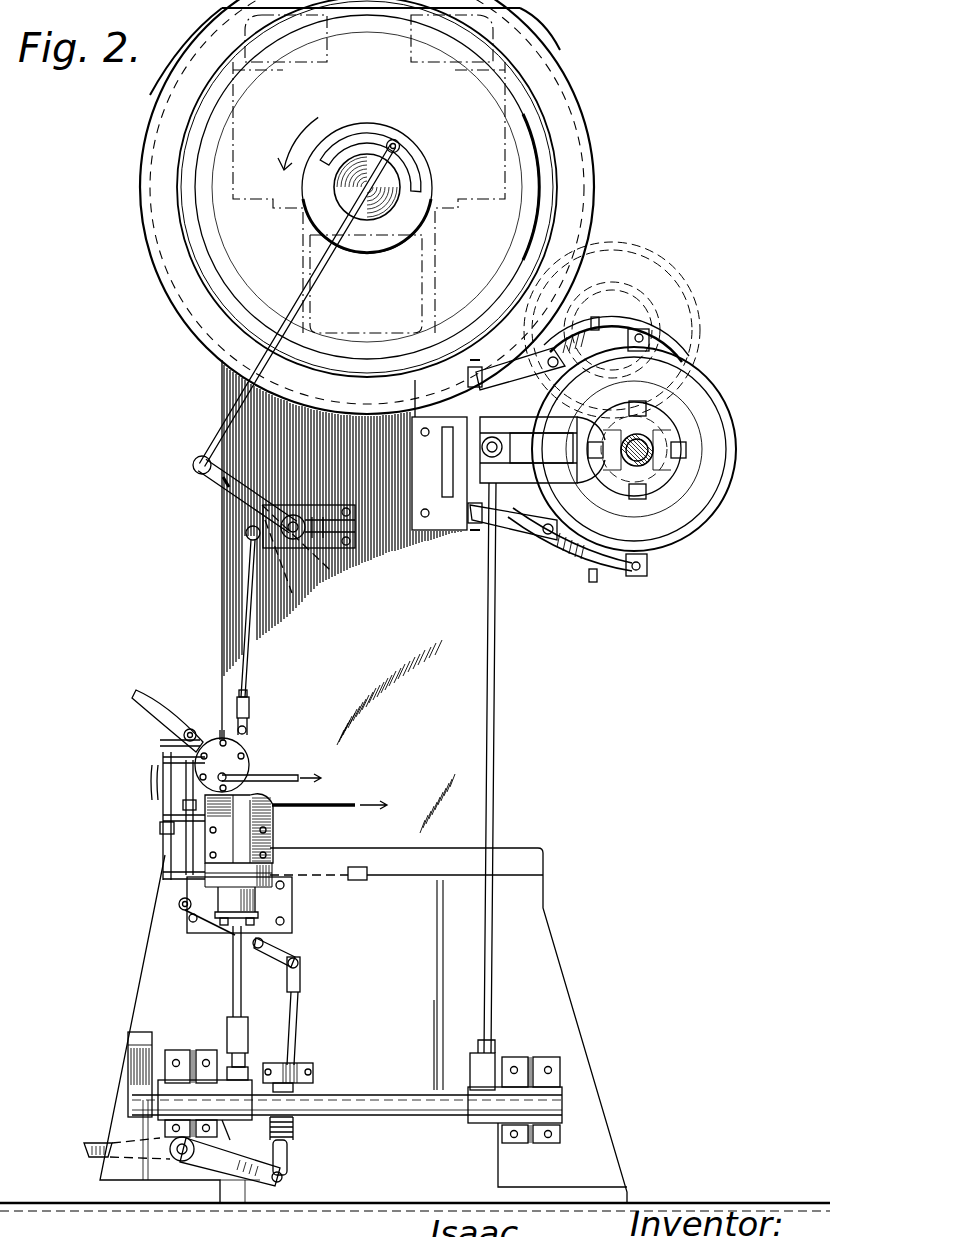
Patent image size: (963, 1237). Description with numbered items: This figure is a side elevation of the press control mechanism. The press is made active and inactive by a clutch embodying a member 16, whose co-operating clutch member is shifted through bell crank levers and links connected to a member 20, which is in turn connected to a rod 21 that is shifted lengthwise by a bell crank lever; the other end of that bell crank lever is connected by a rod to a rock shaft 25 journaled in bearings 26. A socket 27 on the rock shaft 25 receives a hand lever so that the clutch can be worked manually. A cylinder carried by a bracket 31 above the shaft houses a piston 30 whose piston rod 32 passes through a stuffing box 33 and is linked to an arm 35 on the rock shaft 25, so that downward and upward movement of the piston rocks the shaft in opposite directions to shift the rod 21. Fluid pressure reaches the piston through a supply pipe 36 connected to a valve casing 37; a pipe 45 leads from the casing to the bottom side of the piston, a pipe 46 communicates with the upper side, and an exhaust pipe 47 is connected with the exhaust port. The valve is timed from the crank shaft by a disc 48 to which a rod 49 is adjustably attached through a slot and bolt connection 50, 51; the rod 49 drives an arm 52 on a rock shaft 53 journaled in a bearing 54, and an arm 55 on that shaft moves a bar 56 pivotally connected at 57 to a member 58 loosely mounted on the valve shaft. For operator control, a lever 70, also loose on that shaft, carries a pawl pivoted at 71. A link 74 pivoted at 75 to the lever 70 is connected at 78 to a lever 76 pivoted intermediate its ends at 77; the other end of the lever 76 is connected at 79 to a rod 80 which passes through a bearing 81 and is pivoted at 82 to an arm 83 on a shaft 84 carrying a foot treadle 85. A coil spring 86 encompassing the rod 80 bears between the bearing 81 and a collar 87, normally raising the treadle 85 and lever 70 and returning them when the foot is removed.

The clutch member 16 is at (712, 488).
The member 20 is at (497, 712).
The rod 21 is at (542, 460).
The rock shaft 25 is at (392, 1104).
The bearings 26 is at (170, 1099).
The socket 27 is at (130, 1068).
The piston 30 is at (222, 1052).
The bracket 31 is at (285, 904).
The piston rod 32 is at (233, 984).
The stuffing box 33 is at (292, 918).
The arm 35 is at (220, 1130).
The supply pipe 36 is at (303, 776).
The casing 37 is at (248, 765).
The pipe 45 is at (162, 846).
The pipe 46 is at (160, 800).
The exhaust pipe 47 is at (156, 790).
The disc 48 is at (350, 142).
The rod 49 is at (292, 318).
The slot 50 is at (396, 140).
The bolt 51 is at (401, 147).
The arm 52 is at (250, 496).
The rock shaft 53 is at (306, 556).
The bearing 54 is at (338, 510).
The arm 55 is at (276, 583).
The bar 56 is at (246, 622).
The pivot 57 is at (252, 718).
The member 58 is at (255, 740).
The lever 70 is at (160, 720).
The pivot 71 is at (185, 750).
The link 74 is at (186, 882).
The pivot 75 is at (191, 729).
The lever 76 is at (230, 946).
The pivot 77 is at (259, 950).
The pivot 78 is at (178, 907).
The pivot 79 is at (299, 962).
The rod 80 is at (292, 1030).
The bearing 81 is at (300, 1068).
The pivot 82 is at (282, 1182).
The arm 83 is at (246, 1206).
The shaft 84 is at (176, 1160).
The foot treadle 85 is at (88, 1156).
The coil spring 86 is at (297, 1128).
The collar 87 is at (290, 1152).